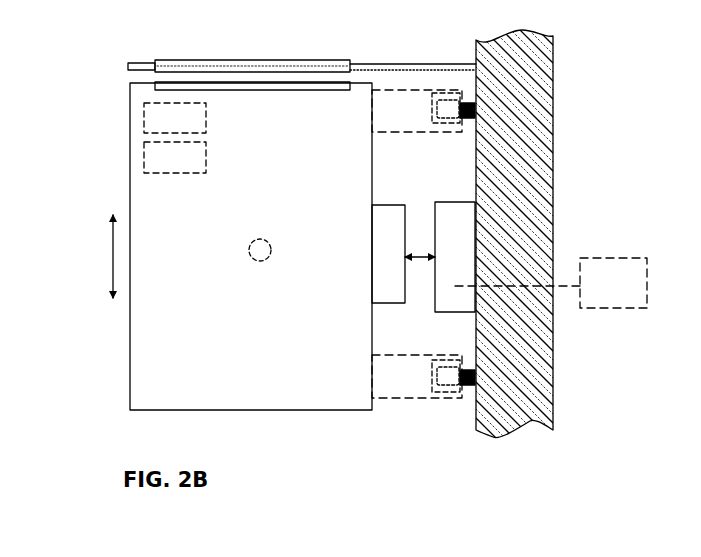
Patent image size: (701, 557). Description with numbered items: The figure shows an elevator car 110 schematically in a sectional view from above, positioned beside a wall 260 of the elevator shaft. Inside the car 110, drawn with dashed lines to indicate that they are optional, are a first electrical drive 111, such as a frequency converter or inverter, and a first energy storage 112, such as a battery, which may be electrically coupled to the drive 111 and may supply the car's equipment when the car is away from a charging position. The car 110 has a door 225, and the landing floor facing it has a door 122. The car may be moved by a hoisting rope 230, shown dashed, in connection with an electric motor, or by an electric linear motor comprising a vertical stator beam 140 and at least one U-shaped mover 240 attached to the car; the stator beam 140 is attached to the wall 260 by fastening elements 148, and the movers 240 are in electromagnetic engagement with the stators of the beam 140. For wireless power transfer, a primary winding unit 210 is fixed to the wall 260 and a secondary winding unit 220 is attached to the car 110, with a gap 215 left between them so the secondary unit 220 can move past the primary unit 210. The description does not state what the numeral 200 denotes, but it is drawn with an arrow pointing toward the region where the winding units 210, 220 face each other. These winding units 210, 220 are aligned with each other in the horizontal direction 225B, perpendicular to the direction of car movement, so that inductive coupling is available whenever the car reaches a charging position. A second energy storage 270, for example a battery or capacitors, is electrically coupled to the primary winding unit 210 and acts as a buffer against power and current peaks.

The elevator car 110 is at (265, 369).
The first electrical drive 111 is at (193, 129).
The first energy storage 112 is at (193, 169).
The door 122 is at (252, 68).
The stator beam 140 is at (450, 100).
The fastening elements 148 is at (470, 120).
The mounting assembly 200 is at (358, 287).
The primary winding unit 210 is at (455, 208).
The gap 215 is at (423, 260).
The secondary winding unit 220 is at (380, 245).
The door 225 is at (315, 87).
The horizontal direction 225B is at (113, 267).
The hoisting rope 230 is at (257, 242).
The mover 240 is at (421, 122).
The wall 260 is at (553, 223).
The second energy storage 270 is at (632, 294).